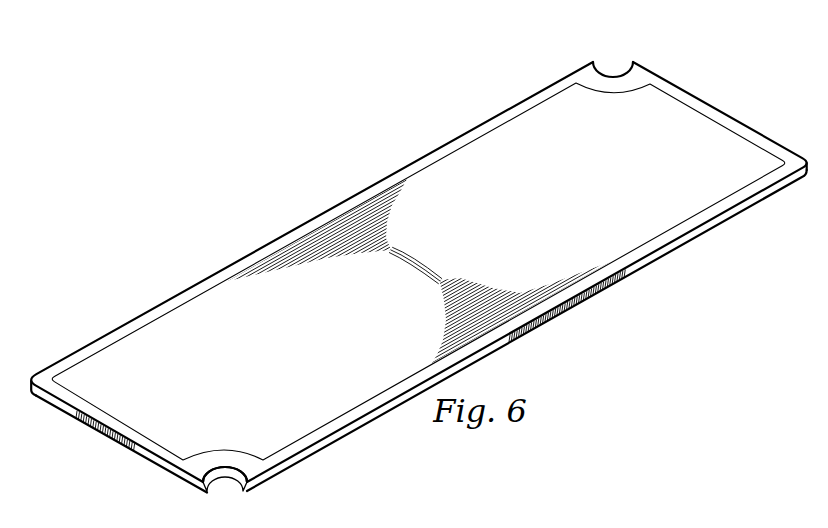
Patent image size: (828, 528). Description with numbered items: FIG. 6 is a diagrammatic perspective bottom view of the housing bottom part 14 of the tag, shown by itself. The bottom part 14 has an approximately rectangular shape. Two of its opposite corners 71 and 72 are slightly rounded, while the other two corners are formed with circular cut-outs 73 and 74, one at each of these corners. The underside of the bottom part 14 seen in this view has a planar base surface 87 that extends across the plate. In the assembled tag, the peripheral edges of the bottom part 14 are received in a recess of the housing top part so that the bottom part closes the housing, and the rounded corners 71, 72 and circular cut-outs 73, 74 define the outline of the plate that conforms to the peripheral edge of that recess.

The bottom part 14 is at (320, 215).
The corner 71 is at (33, 393).
The corner 72 is at (804, 172).
The circular cut-out 73 is at (618, 77).
The circular cut-out 74 is at (229, 469).
The planar base surface 87 is at (446, 244).